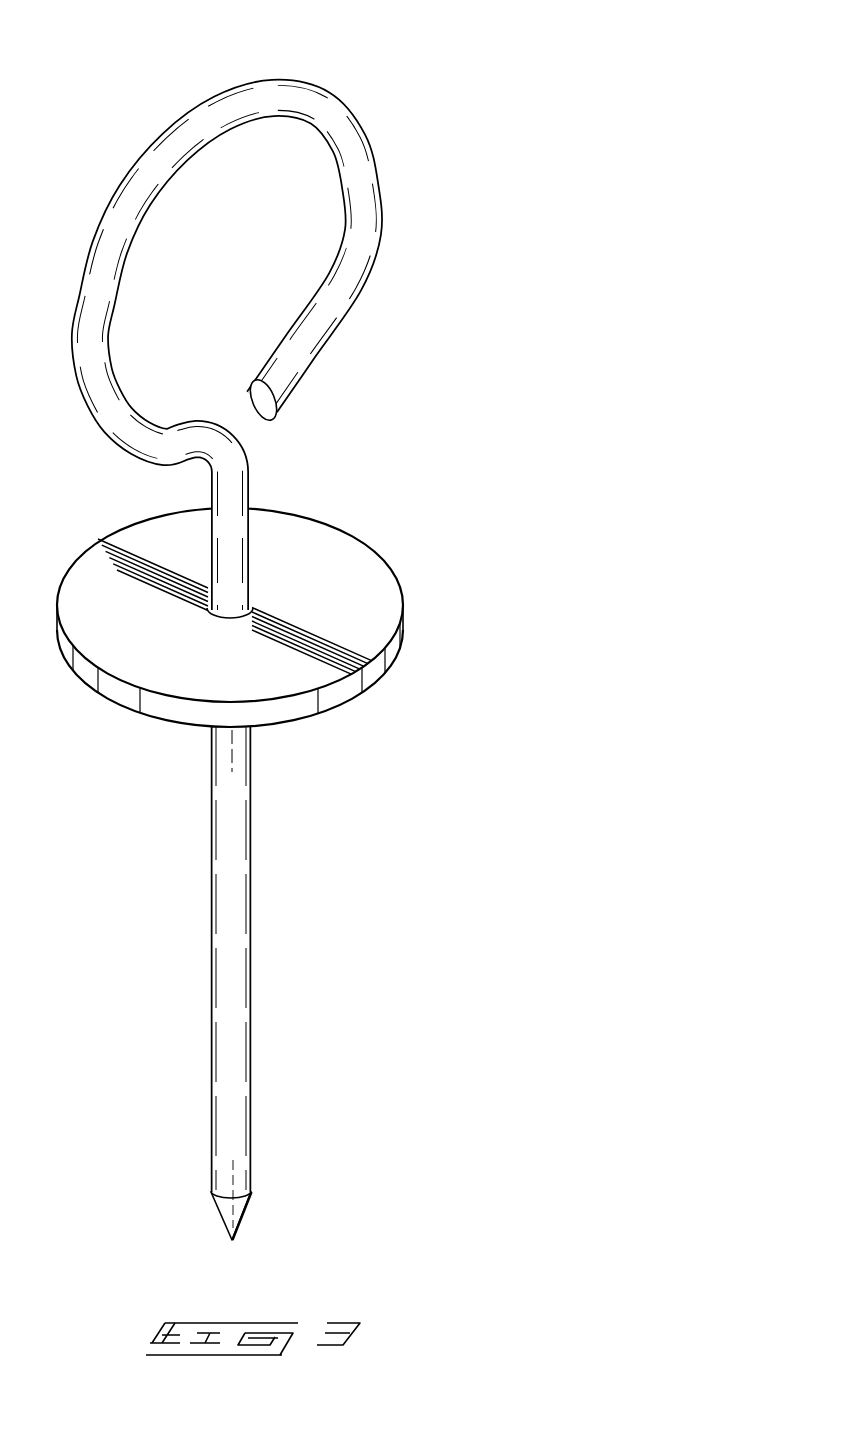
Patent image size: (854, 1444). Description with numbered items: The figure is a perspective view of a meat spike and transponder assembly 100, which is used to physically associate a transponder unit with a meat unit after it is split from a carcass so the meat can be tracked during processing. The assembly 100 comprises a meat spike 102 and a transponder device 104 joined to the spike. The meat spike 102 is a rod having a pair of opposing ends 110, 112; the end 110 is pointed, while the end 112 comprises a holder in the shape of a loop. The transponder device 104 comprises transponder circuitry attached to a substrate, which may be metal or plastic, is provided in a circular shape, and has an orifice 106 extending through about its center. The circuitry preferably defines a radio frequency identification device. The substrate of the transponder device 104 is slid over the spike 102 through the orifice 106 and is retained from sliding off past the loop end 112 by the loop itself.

The meat spike and transponder assembly 100 is at (302, 622).
The meat spike 102 is at (252, 935).
The transponder device 104 is at (358, 690).
The orifice 106 is at (196, 595).
The pointed end 110 is at (278, 1208).
The loop end 112 is at (403, 158).